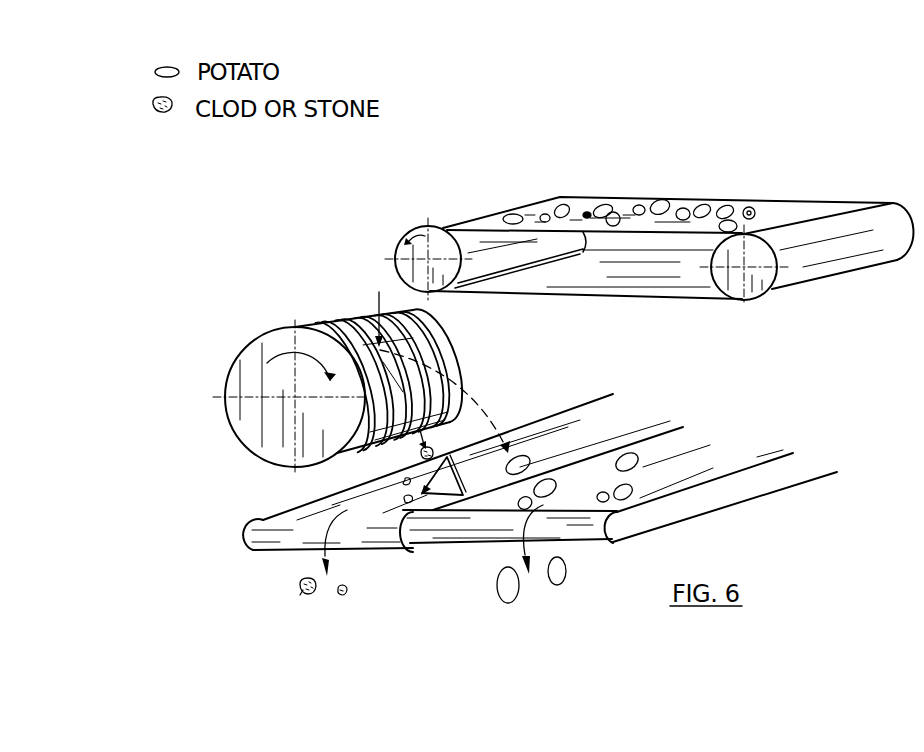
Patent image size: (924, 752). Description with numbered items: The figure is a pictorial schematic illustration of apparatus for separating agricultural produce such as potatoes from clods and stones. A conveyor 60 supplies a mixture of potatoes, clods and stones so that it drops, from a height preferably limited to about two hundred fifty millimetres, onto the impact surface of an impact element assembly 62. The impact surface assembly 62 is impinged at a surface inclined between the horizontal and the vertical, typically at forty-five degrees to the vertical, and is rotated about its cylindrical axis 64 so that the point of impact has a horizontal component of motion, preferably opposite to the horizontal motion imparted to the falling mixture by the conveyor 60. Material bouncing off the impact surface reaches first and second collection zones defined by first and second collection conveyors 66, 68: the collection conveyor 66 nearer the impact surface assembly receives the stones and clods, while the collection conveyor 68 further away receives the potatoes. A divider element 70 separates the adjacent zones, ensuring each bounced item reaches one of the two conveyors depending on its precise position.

The conveyor 60 is at (469, 219).
The impact element assembly 62 is at (320, 334).
The cylindrical axis 64 is at (315, 396).
The first collection conveyor 66 is at (292, 525).
The second collection conveyor 68 is at (690, 477).
The divider element 70 is at (537, 437).